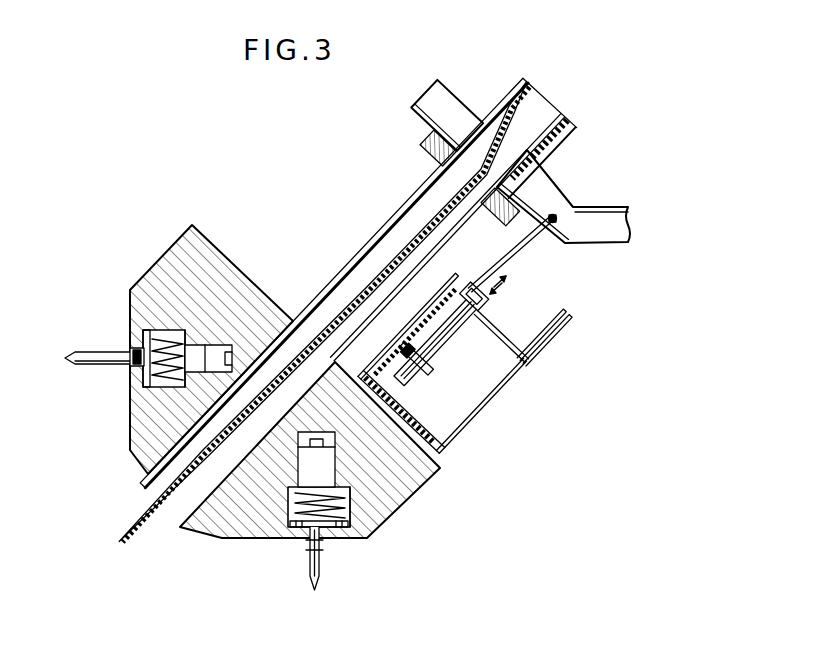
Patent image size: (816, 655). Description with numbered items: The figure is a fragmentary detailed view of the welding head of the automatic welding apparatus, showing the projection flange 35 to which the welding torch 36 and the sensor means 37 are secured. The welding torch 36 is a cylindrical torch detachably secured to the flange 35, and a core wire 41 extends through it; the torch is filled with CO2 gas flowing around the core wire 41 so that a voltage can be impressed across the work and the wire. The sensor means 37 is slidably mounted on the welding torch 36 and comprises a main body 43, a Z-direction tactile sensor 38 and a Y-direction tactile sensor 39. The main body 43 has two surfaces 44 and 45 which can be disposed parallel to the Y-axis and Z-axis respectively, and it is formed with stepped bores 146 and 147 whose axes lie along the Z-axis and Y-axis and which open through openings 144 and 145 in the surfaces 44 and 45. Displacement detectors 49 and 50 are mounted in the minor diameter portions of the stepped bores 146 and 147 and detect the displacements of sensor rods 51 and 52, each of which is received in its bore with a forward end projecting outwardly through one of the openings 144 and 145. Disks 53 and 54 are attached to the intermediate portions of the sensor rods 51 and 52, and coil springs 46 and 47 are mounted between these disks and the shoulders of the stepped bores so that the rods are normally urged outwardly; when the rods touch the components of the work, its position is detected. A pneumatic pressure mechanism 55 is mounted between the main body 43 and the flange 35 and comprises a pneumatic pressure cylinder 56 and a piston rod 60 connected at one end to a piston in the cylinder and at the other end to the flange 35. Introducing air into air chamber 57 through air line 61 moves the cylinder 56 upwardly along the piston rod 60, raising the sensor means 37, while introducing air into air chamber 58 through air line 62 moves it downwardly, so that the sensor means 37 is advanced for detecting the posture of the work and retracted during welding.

The projection flange 35 is at (460, 108).
The welding torch 36 is at (400, 223).
The sensor means 37 is at (221, 236).
The Z-direction tactile sensor 38 is at (328, 591).
The Y-direction tactile sensor 39 is at (88, 368).
The core wire 41 is at (140, 530).
The main body 43 is at (398, 495).
The surface 44 is at (252, 538).
The surface 45 is at (128, 416).
The coil spring 46 is at (290, 503).
The coil spring 47 is at (165, 330).
The displacement detector 49 is at (330, 457).
The displacement detector 50 is at (215, 355).
The sensor rod 51 is at (310, 560).
The sensor rod 52 is at (88, 352).
The disk 53 is at (340, 530).
The disk 54 is at (141, 376).
The pneumatic pressure mechanism 55 is at (437, 367).
The pneumatic pressure cylinder 56 is at (474, 294).
The air chamber 57 is at (436, 336).
The air chamber 58 is at (403, 378).
The piston rod 60 is at (516, 253).
The air line 61 is at (540, 347).
The air line 62 is at (543, 357).
The opening 144 is at (305, 548).
The opening 145 is at (130, 350).
The stepped bore 146 is at (378, 508).
The stepped bore 147 is at (190, 334).